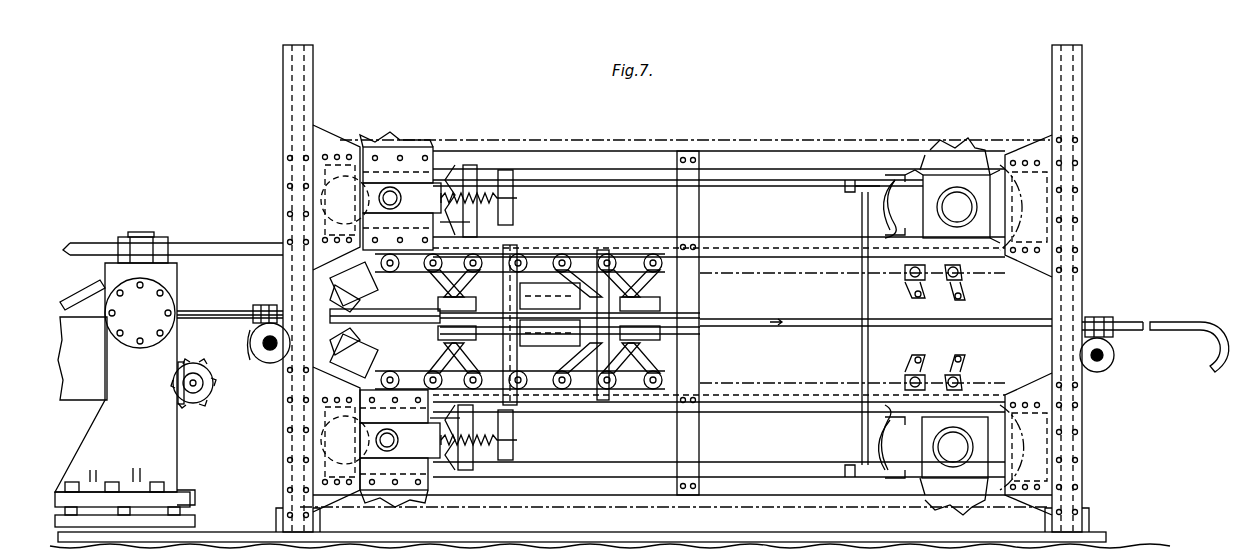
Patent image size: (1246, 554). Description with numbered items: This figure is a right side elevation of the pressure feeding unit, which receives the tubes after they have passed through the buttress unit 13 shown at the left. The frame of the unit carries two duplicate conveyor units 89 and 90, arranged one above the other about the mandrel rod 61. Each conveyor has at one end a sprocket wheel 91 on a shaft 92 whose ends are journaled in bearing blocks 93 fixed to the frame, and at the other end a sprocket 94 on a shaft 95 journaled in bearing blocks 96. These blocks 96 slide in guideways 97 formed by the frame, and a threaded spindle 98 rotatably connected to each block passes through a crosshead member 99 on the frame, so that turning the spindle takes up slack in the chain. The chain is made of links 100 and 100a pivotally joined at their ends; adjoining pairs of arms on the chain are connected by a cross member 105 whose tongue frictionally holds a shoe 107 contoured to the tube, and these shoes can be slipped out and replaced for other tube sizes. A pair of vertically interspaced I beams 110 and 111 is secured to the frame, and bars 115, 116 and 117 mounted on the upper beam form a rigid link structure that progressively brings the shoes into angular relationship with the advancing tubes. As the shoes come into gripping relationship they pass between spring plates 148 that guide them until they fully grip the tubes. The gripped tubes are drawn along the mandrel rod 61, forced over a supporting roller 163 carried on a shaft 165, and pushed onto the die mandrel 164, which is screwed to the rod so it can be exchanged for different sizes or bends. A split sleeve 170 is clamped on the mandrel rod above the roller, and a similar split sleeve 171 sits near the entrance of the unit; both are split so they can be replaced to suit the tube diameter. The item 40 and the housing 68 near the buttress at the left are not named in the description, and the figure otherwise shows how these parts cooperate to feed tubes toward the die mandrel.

The buttress unit 13 is at (169, 379).
The gear 40 is at (214, 393).
The mandrel rod 61 is at (834, 324).
The gear housing 68 is at (140, 313).
The conveyor unit 89 is at (756, 274).
The conveyor unit 90 is at (780, 384).
The sprocket wheel 91 is at (958, 148).
The shaft 92 is at (956, 326).
The bearing block 93 is at (975, 228).
The sprocket 94 is at (366, 146).
The shaft 95 is at (393, 189).
The bearing block 96 is at (400, 312).
The guideway 97 is at (457, 165).
The threaded spindle 98 is at (505, 213).
The crosshead member 99 is at (476, 165).
The link 100 is at (540, 388).
The link 100a is at (590, 388).
The cross member 105 is at (377, 324).
The shoe 107 is at (495, 320).
The I beam 110 is at (719, 204).
The I beam 111 is at (682, 445).
The bar 115 is at (430, 418).
The bar 116 is at (545, 224).
The bar 117 is at (440, 222).
The spring plate 148 is at (549, 318).
The supporting roller 163 is at (272, 364).
The die mandrel 164 is at (1190, 322).
The shaft 165 is at (1101, 359).
The split sleeve 170 is at (1098, 317).
The split sleeve 171 is at (270, 305).